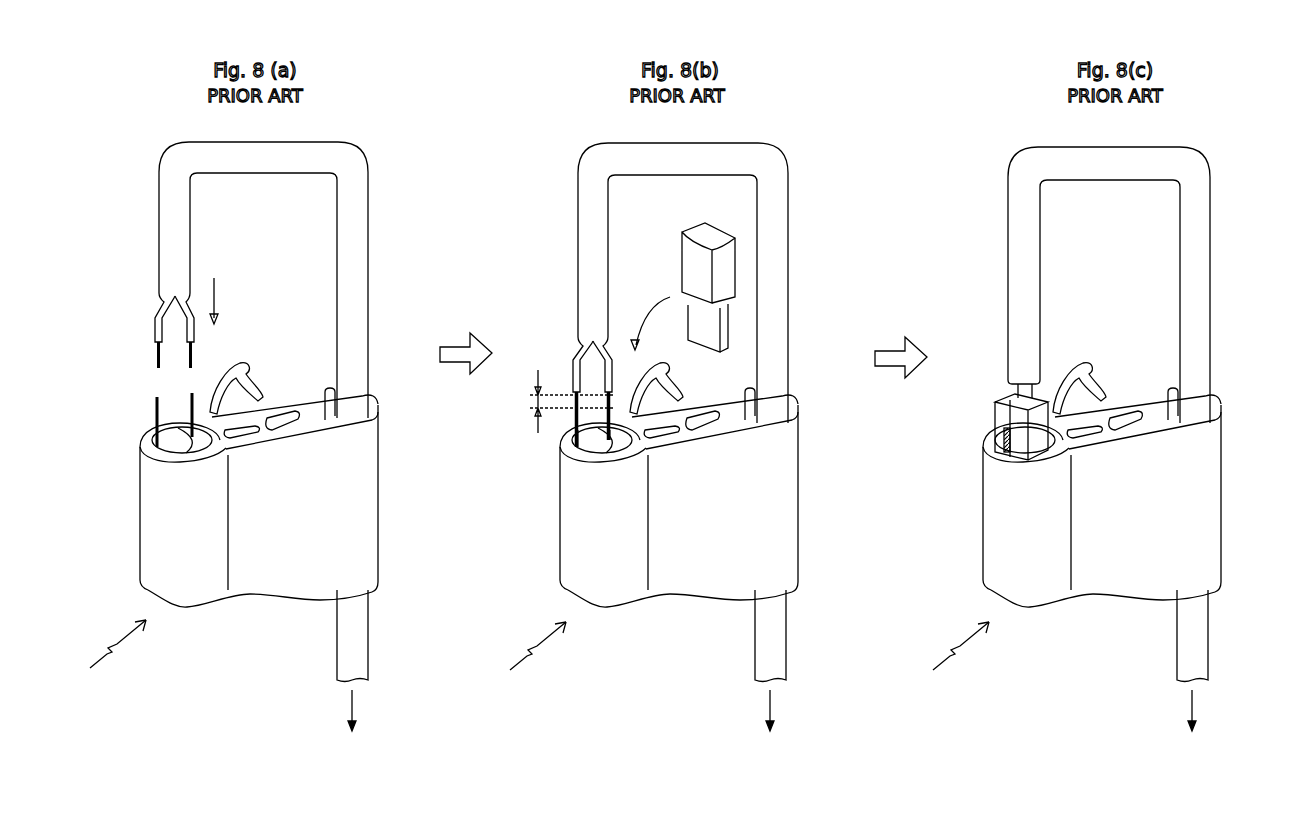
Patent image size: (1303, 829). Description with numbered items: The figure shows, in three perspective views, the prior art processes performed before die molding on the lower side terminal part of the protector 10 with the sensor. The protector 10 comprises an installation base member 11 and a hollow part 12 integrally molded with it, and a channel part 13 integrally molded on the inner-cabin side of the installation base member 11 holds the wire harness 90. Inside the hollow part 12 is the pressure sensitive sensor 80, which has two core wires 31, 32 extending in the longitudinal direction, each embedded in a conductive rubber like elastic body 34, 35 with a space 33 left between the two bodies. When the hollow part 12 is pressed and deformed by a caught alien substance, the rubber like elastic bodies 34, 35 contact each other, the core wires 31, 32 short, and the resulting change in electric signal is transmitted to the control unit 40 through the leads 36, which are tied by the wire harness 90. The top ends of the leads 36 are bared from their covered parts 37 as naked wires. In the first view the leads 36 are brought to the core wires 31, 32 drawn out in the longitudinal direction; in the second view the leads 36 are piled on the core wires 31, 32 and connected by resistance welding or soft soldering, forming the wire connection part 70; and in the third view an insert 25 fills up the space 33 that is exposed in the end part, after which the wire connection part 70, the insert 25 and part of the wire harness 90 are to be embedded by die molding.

In FIG. 8A, the protector with the sensor 10 is at (104, 652).
In FIG. 8B, the protector with the sensor 10 is at (524, 654).
In FIG. 8C, the protector with the sensor 10 is at (945, 654).
In FIG. 8A, the installation base member 11 is at (353, 527).
In FIG. 8B, the installation base member 11 is at (772, 530).
In FIG. 8C, the installation base member 11 is at (1195, 532).
In FIG. 8A, the hollow part 12 is at (200, 590).
In FIG. 8B, the hollow part 12 is at (620, 590).
In FIG. 8C, the hollow part 12 is at (1043, 590).
In FIG. 8A, the channel part 13 is at (372, 403).
In FIG. 8B, the channel part 13 is at (792, 407).
In FIG. 8C, the channel part 13 is at (1213, 408).
In FIG. 8B, the insert 25 is at (680, 255).
In FIG. 8C, the insert 25 is at (997, 383).
In FIG. 8A, the core wire 31 is at (157, 410).
In FIG. 8B, the core wire 31 is at (567, 430).
In FIG. 8A, the core wire 32 is at (190, 393).
In FIG. 8B, the core wire 32 is at (650, 453).
In FIG. 8A, the space 33 is at (187, 452).
In FIG. 8B, the space 33 is at (610, 455).
In FIG. 8A, the rubber like elastic body 34 is at (170, 445).
In FIG. 8B, the rubber like elastic body 34 is at (587, 448).
In FIG. 8C, the rubber like elastic body 34 is at (1025, 440).
In FIG. 8A, the rubber like elastic body 35 is at (207, 453).
In FIG. 8B, the rubber like elastic body 35 is at (627, 458).
In FIG. 8C, the rubber like elastic body 35 is at (1026, 442).
In FIG. 8A, the lead 36 is at (150, 357).
In FIG. 8B, the lead 36 is at (572, 395).
In FIG. 8A, the covered part 37 is at (152, 334).
In FIG. 8B, the covered part 37 is at (572, 372).
In FIG. 8C, the covered part 37 is at (1043, 383).
In FIG. 8A, the control unit 40 is at (335, 762).
In FIG. 8B, the control unit 40 is at (752, 762).
In FIG. 8C, the control unit 40 is at (1175, 762).
In FIG. 8B, the wire connection part 70 is at (556, 401).
In FIG. 8C, the wire connection part 70 is at (1000, 435).
In FIG. 8A, the pressure sensitive sensor 80 is at (155, 555).
In FIG. 8B, the pressure sensitive sensor 80 is at (577, 558).
In FIG. 8C, the pressure sensitive sensor 80 is at (993, 560).
In FIG. 8A, the wire harness 90 is at (353, 242).
In FIG. 8B, the wire harness 90 is at (773, 245).
In FIG. 8C, the wire harness 90 is at (1197, 245).